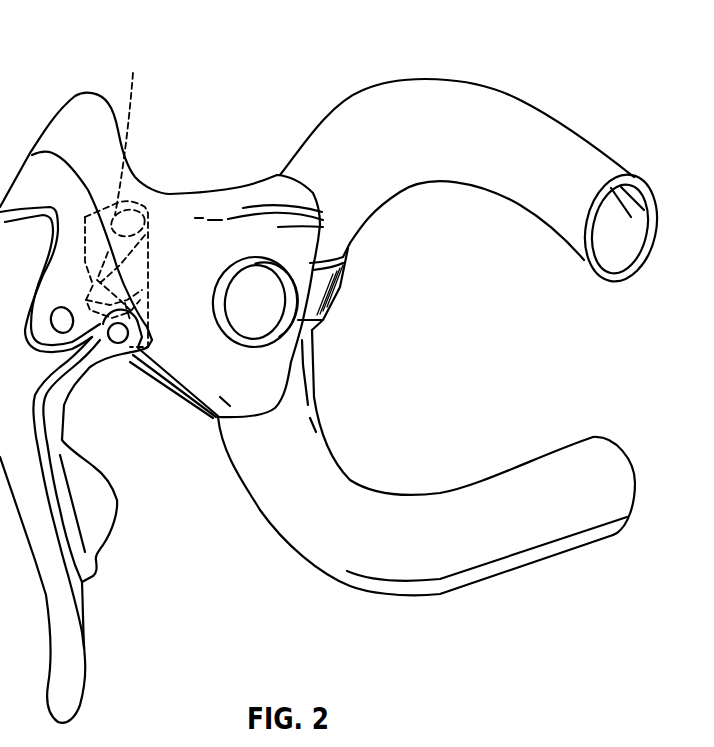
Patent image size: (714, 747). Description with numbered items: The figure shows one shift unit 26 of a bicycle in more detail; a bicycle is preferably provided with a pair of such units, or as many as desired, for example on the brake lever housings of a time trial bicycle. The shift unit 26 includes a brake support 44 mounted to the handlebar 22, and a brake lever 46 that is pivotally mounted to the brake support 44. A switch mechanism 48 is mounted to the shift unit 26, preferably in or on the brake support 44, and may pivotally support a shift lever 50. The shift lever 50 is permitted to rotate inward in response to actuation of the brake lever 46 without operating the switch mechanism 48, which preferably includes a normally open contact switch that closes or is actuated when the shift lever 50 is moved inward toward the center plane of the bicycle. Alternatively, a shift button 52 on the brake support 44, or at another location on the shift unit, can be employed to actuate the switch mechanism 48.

The handlebar 22 is at (519, 97).
The shift unit 26 is at (333, 372).
The brake support 44 is at (258, 195).
The brake lever 46 is at (60, 702).
The switch mechanism 48 is at (117, 184).
The shift lever 50 is at (93, 503).
The shift button 52 is at (258, 313).